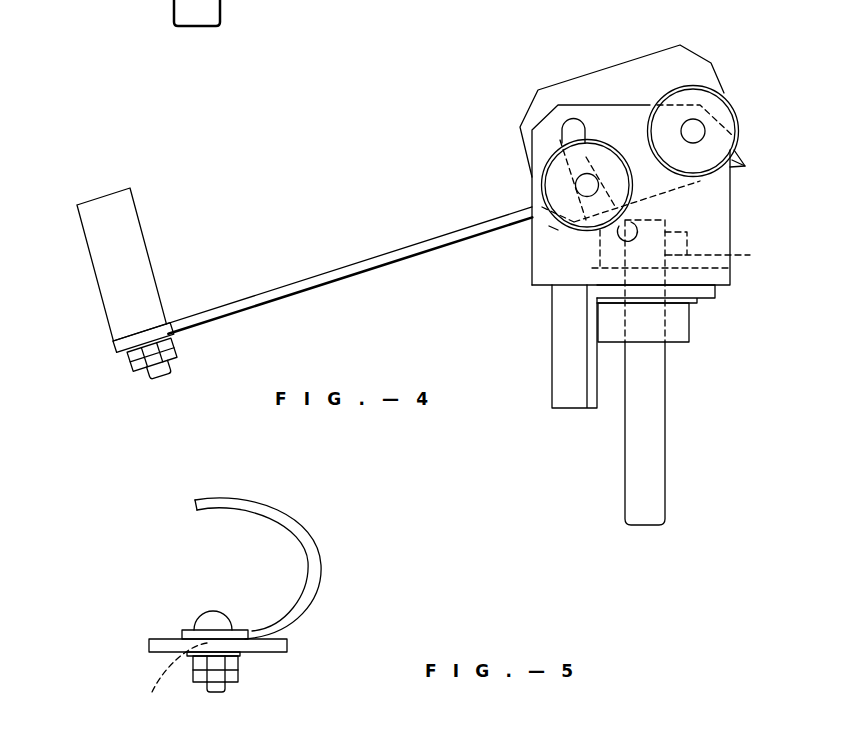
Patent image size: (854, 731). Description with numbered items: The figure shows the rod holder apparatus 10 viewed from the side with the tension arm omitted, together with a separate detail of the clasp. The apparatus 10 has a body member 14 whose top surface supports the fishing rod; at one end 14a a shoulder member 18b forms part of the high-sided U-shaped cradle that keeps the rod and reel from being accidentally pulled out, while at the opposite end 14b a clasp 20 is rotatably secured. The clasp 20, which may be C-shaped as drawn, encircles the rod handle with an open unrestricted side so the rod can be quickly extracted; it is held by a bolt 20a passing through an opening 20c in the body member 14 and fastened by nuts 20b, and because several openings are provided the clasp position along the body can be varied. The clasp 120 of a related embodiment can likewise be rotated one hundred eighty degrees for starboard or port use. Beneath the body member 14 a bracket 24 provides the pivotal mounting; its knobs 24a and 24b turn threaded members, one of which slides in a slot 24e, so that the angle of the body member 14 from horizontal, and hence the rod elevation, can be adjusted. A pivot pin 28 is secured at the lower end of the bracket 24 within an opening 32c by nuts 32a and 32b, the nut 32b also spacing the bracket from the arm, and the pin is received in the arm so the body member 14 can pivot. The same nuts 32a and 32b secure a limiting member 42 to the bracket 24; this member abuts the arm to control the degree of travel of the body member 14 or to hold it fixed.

In FIG. 4, the rod holder apparatus 10 is at (437, 138).
In FIG. 4, the body member 14 is at (342, 270).
In FIG. 4, the end of body member 14a is at (733, 172).
In FIG. 4, the end of body member 14b is at (170, 329).
In FIG. 5, the end of body member 14b is at (282, 643).
In FIG. 4, the shoulder member 18b is at (572, 88).
In FIG. 4, the clasp 20 is at (138, 225).
In FIG. 5, the clasp 20 is at (307, 540).
In FIG. 5, the clasp 120 is at (295, 568).
In FIG. 4, the bolt 20a is at (152, 382).
In FIG. 5, the bolt 20a is at (250, 577).
In FIG. 4, the nuts 20b is at (130, 362).
In FIG. 5, the nuts 20b is at (240, 664).
In FIG. 5, the opening 20c is at (160, 673).
In FIG. 4, the bracket 24 is at (713, 220).
In FIG. 4, the knob 24a is at (548, 188).
In FIG. 4, the knob 24b is at (668, 97).
In FIG. 4, the slot 24e is at (563, 136).
In FIG. 4, the pivot pin 28 is at (632, 437).
In FIG. 4, the nut 32a is at (689, 246).
In FIG. 4, the nut 32b is at (689, 340).
In FIG. 4, the opening 32c is at (703, 298).
In FIG. 4, the limiting member 42 is at (560, 353).